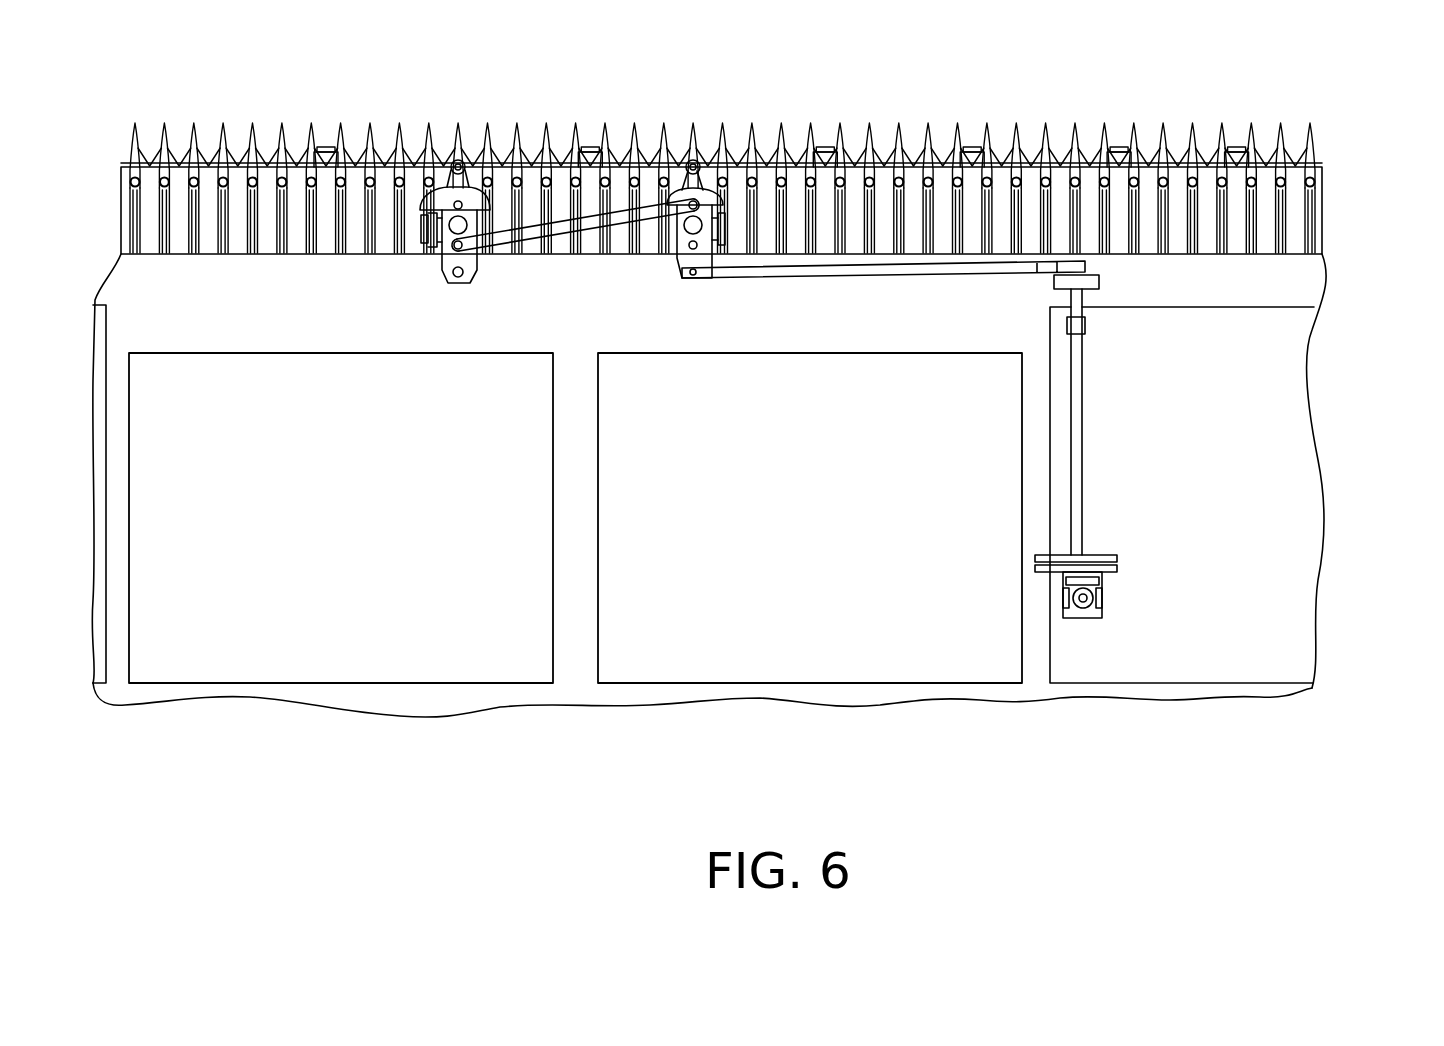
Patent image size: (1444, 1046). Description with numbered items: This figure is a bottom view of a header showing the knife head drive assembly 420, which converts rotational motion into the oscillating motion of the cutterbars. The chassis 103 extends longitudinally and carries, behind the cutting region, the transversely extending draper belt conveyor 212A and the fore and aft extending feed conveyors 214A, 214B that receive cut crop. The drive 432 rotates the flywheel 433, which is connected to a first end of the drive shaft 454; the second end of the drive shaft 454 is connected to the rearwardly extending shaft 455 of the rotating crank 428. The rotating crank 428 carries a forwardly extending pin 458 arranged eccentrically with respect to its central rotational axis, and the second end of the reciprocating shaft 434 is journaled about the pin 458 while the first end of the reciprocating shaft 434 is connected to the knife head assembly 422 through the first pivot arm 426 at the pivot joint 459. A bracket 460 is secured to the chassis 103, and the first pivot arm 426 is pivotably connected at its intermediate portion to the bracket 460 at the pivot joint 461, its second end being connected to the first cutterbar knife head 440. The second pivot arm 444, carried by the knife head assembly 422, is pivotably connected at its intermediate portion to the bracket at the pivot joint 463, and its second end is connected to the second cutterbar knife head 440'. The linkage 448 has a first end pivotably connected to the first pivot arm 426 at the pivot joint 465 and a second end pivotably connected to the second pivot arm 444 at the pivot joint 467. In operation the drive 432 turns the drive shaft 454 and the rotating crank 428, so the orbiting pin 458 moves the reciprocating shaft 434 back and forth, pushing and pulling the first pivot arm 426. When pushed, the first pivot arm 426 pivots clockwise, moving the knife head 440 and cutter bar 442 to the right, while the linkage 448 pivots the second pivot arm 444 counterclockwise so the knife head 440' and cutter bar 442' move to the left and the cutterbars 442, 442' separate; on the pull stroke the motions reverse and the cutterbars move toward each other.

The chassis 103 is at (1327, 209).
The knife head drive assembly 420 is at (722, 128).
The knife head assembly 422 is at (588, 114).
The cutter bar 442' is at (438, 110).
The cutter bar 442 is at (1030, 113).
The second cutterbar knife head 440' is at (484, 108).
The first cutterbar knife head 440 is at (664, 116).
The second pivot arm 444 is at (428, 202).
The pivot joint 463 is at (456, 220).
The pivot joint 467 is at (455, 247).
The first pivot arm 426 is at (744, 205).
The pivot joint 461 is at (702, 225).
The pivot joint 465 is at (697, 203).
The pivot joint 459 is at (695, 275).
The bracket 460 is at (575, 262).
The linkage 448 is at (590, 237).
The rotating crank 428 is at (1051, 422).
The reciprocating shaft 434 is at (995, 265).
The pin 458 is at (1097, 274).
The drive shaft 454 is at (1084, 457).
The rearwardly extending shaft 455 is at (1087, 313).
The flywheel 433 is at (1117, 562).
The drive 432 is at (1103, 605).
The feed conveyor 214B is at (294, 626).
The feed conveyor 214A is at (820, 645).
The draper belt conveyor 212A is at (1247, 614).